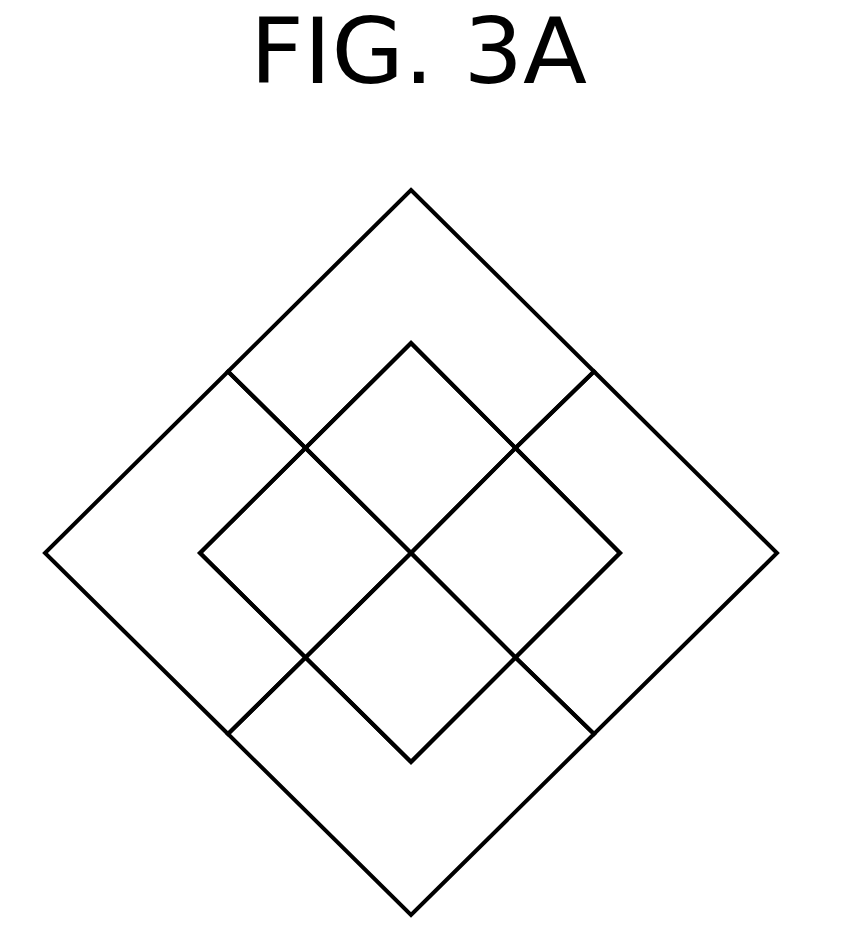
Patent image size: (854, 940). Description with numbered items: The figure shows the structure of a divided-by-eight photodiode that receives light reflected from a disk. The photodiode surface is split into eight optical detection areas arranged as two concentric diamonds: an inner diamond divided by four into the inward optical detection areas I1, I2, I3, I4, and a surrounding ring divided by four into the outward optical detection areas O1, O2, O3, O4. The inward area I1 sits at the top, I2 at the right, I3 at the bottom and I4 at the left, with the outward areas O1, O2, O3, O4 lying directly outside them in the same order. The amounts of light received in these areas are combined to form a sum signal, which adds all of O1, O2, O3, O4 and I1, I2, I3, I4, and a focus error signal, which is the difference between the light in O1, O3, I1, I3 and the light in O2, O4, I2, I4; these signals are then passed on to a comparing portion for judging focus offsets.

The outward optical detection area O1 is at (411, 319).
The outward optical detection area O2 is at (647, 553).
The outward optical detection area O3 is at (411, 787).
The outward optical detection area O4 is at (175, 553).
The inward optical detection area I1 is at (404, 416).
The inward optical detection area I2 is at (506, 533).
The inward optical detection area I3 is at (396, 633).
The inward optical detection area I4 is at (286, 533).